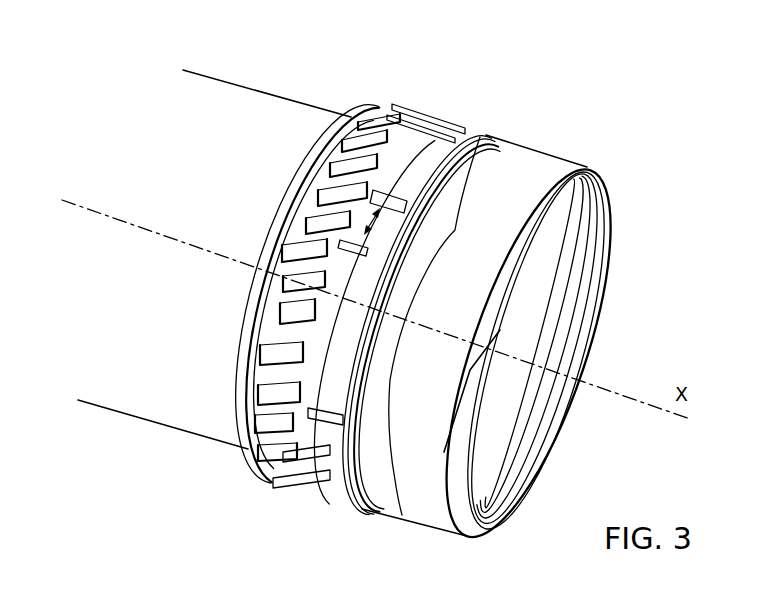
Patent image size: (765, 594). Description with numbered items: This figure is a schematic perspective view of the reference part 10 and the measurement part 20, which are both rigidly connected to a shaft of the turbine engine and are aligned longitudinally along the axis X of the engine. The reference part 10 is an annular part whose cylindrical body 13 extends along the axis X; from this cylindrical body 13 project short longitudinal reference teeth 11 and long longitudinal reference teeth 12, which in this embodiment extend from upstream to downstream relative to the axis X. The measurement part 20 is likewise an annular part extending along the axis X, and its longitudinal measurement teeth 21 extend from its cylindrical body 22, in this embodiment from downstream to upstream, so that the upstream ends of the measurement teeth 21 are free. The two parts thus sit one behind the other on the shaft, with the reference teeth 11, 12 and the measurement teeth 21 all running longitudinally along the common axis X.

The reference part 10 is at (208, 96).
The short longitudinal reference teeth 11 is at (392, 128).
The long longitudinal reference teeth 12 is at (366, 252).
The cylindrical body 13 is at (270, 118).
The measurement part 20 is at (534, 146).
The longitudinal measurement teeth 21 is at (462, 133).
The cylindrical body 22 is at (560, 166).